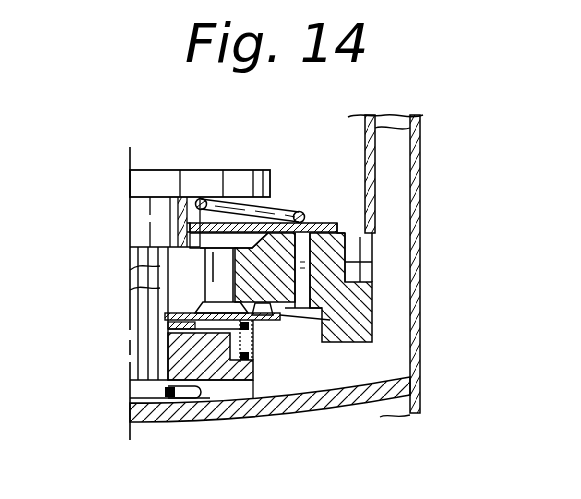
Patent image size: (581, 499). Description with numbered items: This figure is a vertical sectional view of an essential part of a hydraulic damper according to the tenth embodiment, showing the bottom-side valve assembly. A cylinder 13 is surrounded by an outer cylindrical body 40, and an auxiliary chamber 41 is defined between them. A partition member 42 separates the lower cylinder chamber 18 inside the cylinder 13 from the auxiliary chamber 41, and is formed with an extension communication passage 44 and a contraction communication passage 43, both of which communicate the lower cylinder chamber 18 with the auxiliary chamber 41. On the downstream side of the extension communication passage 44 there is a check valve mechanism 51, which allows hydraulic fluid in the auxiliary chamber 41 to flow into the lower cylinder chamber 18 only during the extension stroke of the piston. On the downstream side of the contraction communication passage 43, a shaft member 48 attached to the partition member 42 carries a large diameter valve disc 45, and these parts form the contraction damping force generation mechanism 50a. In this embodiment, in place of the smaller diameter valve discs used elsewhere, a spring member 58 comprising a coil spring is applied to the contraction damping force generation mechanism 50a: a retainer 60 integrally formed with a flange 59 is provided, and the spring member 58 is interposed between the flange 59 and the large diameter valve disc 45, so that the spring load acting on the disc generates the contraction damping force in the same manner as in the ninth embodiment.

The cylinder 13 is at (372, 158).
The lower cylinder chamber 18 is at (352, 133).
The outer cylindrical body 40 is at (418, 202).
The auxiliary chamber 41 is at (400, 233).
The partition member 42 is at (368, 305).
The contraction communication passage 43 is at (178, 272).
The extension communication passage 44 is at (368, 267).
The large diameter valve disc 45 is at (407, 347).
The shaft member 48 is at (150, 327).
The contraction damping force generation mechanism 50a is at (250, 388).
The check valve mechanism 51 is at (290, 195).
The spring member 58 is at (300, 370).
The flange 59 is at (238, 388).
The retainer 60 is at (187, 400).